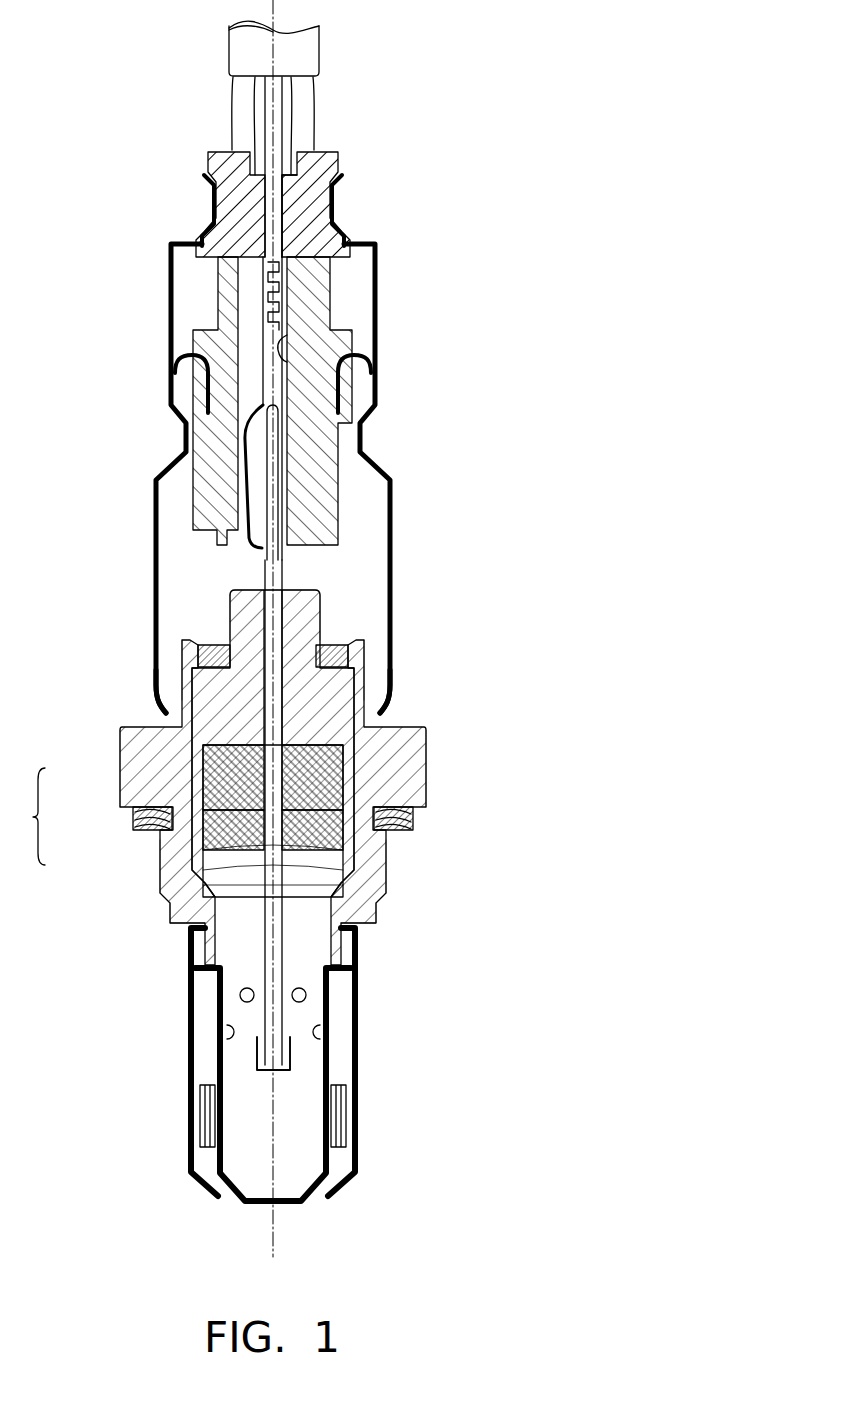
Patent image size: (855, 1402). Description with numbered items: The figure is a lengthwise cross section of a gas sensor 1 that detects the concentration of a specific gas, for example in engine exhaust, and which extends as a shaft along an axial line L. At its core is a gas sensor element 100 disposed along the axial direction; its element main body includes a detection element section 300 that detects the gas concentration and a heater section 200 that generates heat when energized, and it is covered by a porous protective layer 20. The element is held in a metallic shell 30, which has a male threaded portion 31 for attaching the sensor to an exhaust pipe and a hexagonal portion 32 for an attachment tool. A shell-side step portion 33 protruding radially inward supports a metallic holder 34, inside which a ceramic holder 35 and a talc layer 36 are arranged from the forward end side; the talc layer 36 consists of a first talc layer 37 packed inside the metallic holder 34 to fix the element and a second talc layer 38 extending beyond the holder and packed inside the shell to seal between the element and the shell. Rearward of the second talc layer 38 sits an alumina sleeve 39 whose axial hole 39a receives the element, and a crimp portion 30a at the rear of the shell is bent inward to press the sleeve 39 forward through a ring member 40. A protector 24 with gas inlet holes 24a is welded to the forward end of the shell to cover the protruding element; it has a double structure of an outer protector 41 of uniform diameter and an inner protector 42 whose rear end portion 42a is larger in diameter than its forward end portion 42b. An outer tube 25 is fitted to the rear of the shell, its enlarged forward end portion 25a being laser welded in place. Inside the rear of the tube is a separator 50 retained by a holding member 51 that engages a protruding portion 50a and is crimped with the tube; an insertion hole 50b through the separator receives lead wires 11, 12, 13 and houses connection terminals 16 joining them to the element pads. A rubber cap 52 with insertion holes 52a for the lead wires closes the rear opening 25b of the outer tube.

The gas sensor 1 is at (543, 193).
The lead wire 11 is at (270, 133).
The lead wire 12 is at (240, 97).
The lead wire 13 is at (305, 123).
The connection terminals 16 is at (273, 383).
The porous protective layer 20 is at (268, 1072).
The protector 24 is at (266, 1103).
The gas inlet holes 24a is at (300, 993).
The outer tube 25 is at (302, 435).
The forward end portion of outer tube 25a is at (392, 698).
The rear opening of outer tube 25b is at (335, 198).
The metallic shell 30 is at (293, 777).
The crimp portion 30a is at (340, 640).
The male threaded portion 31 is at (382, 885).
The hexagonal portion 32 is at (430, 752).
The shell-side step portion 33 is at (350, 855).
The metallic holder 34 is at (197, 922).
The ceramic holder 35 is at (213, 886).
The talc layer 36 is at (208, 807).
The first talc layer 37 is at (233, 832).
The second talc layer 38 is at (215, 773).
The sleeve 39 is at (208, 753).
The axial hole 39a is at (268, 606).
The ring member 40 is at (363, 655).
The outer protector 41 is at (326, 1084).
The inner protector 42 is at (215, 1062).
The rear end portion of inner protector 42a is at (215, 967).
The forward end portion of inner protector 42b is at (200, 1082).
The separator 50 is at (274, 391).
The protruding portion 50a is at (347, 345).
The insertion hole 50b is at (283, 335).
The holding member 51 is at (173, 373).
The rubber cap 52 is at (242, 210).
The insertion holes 52a is at (283, 232).
The gas sensor element 100 is at (297, 1067).
The heater section 200 is at (273, 1053).
The detection element section 300 is at (278, 1053).
The axial line L is at (277, 1152).